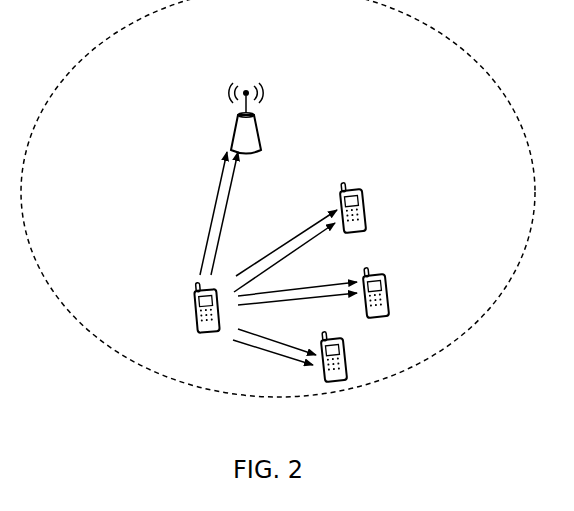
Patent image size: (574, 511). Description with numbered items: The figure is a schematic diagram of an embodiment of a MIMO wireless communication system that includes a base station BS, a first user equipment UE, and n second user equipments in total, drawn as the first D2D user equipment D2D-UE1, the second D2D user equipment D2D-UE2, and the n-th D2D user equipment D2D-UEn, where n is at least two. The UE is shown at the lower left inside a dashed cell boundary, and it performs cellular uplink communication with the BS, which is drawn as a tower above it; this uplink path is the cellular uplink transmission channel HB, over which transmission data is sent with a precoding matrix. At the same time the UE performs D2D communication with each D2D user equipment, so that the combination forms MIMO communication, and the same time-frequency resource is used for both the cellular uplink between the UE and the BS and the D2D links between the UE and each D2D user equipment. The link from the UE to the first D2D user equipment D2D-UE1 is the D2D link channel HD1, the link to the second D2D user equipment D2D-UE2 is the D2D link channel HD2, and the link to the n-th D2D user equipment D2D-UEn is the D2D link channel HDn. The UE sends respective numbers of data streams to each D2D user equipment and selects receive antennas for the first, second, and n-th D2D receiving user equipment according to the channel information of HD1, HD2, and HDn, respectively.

The base station BS is at (246, 105).
The user equipment UE is at (205, 328).
The D2D UE1 D2D-UE1 is at (390, 196).
The D2D UE2 D2D-UE2 is at (425, 292).
The D2D UEn D2D-UEn is at (389, 356).
The cellular uplink transmission channel HB is at (219, 213).
The D2D link channel to D2D UE1 HD1 is at (285, 251).
The D2D link channel to D2D UE2 HD2 is at (297, 287).
The D2D link channel to D2D UEn HDn is at (274, 350).